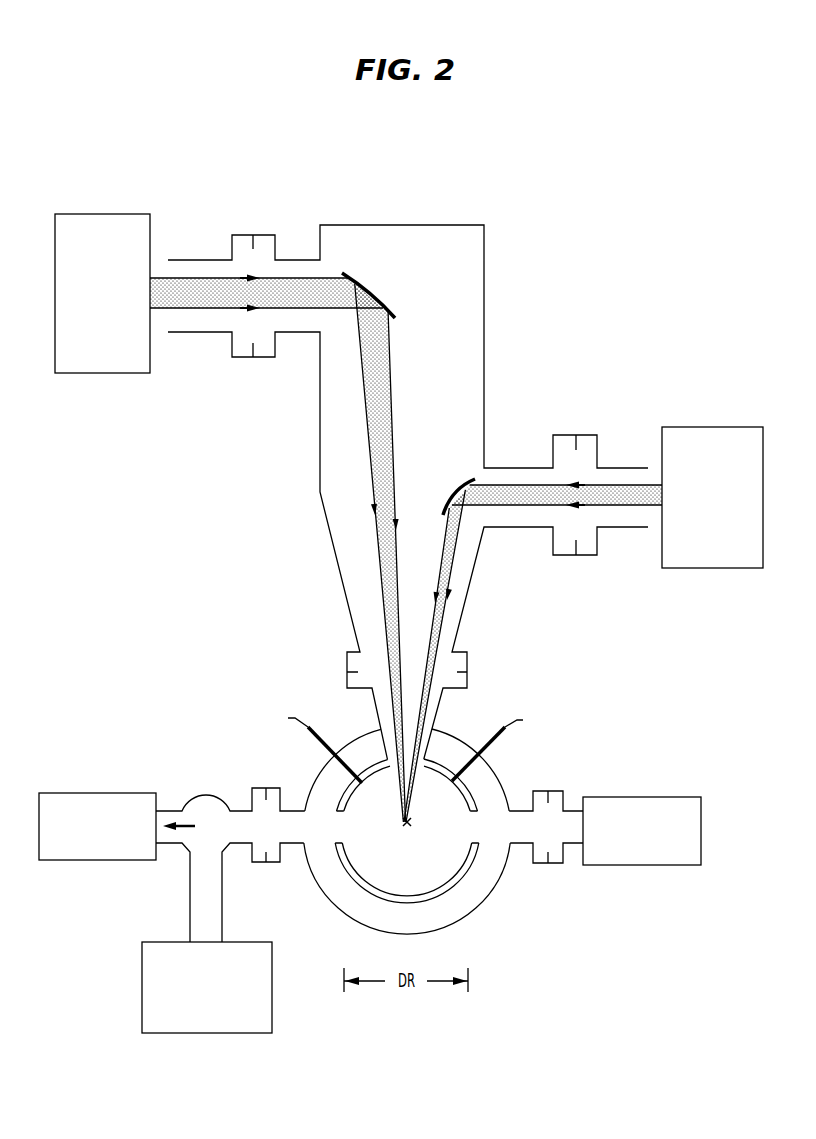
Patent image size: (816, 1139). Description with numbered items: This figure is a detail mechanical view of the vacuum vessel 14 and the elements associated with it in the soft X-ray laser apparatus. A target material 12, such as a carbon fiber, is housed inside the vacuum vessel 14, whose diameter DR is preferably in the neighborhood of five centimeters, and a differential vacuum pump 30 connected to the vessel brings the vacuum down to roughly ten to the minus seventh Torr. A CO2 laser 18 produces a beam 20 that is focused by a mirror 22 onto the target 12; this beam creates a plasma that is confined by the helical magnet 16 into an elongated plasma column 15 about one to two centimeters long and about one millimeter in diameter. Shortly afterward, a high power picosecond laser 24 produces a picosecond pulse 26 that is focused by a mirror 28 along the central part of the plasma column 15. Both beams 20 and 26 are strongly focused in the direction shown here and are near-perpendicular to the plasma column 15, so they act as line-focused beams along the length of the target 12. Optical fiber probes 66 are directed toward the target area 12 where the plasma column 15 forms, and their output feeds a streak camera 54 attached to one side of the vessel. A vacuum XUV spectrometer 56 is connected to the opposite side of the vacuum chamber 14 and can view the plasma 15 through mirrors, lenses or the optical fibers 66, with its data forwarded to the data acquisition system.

The target material 12 is at (411, 823).
The vacuum vessel 14 is at (469, 866).
The plasma column 15 is at (407, 822).
The helical magnet 16 is at (470, 907).
The CO2 laser 18 is at (105, 374).
The CO2 laser beam 20 is at (382, 383).
The mirror 22 is at (347, 275).
The high power picosecond laser 24 is at (722, 568).
The picosecond laser pulse 26 is at (452, 541).
The mirror 28 is at (462, 482).
The differential vacuum pump 30 is at (272, 975).
The streak camera 54 is at (648, 796).
The vacuum XUV spectrometer 56 is at (93, 793).
The optical fiber probes 66 is at (322, 740).